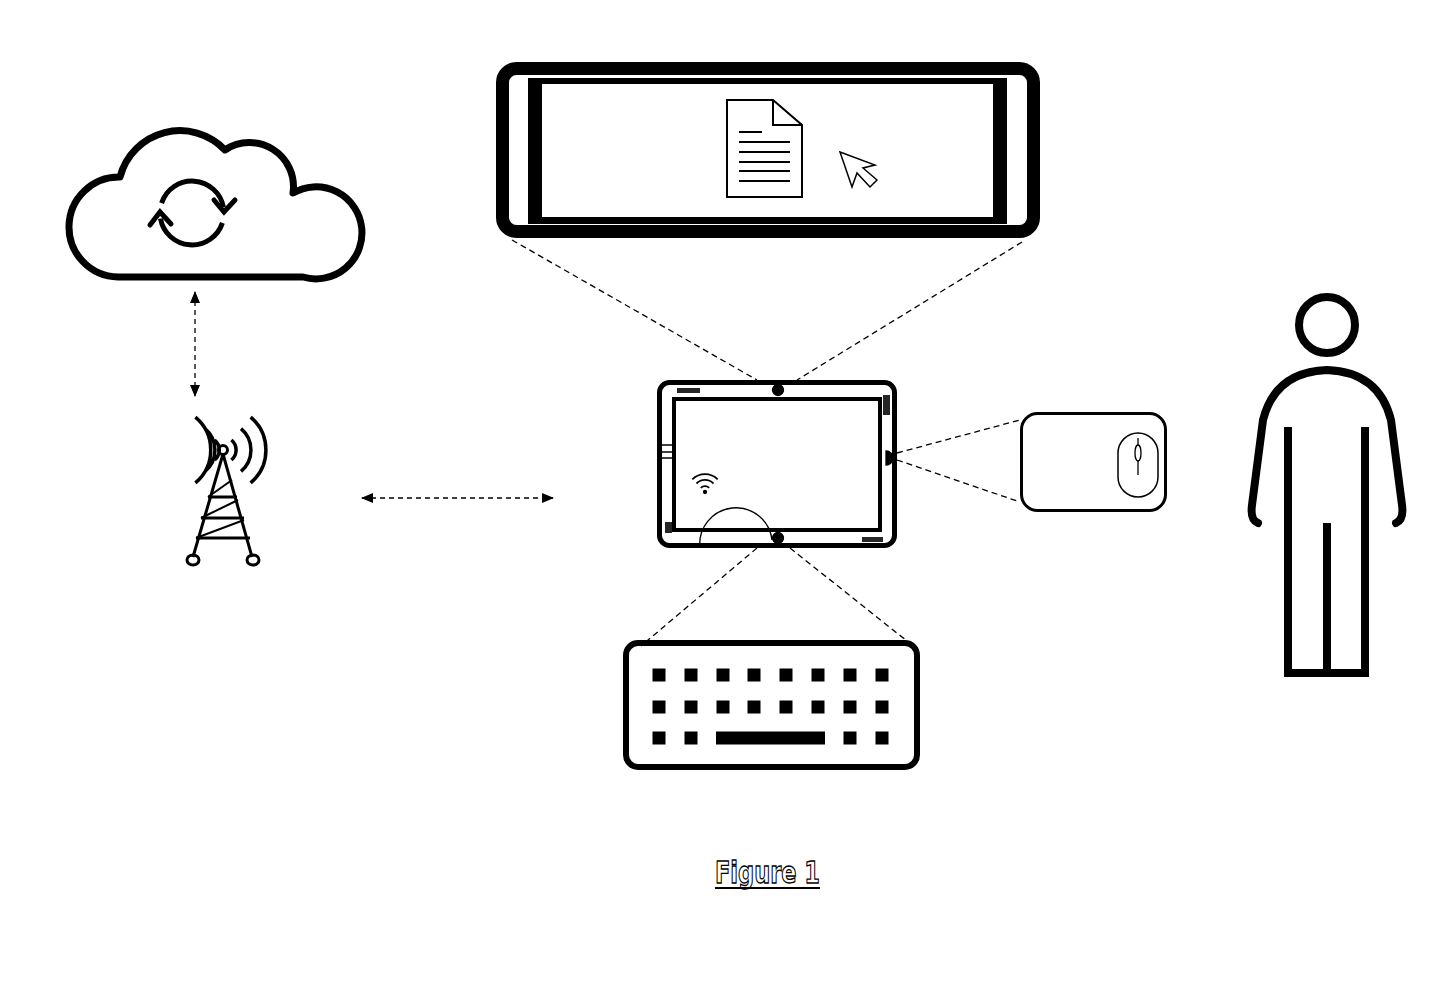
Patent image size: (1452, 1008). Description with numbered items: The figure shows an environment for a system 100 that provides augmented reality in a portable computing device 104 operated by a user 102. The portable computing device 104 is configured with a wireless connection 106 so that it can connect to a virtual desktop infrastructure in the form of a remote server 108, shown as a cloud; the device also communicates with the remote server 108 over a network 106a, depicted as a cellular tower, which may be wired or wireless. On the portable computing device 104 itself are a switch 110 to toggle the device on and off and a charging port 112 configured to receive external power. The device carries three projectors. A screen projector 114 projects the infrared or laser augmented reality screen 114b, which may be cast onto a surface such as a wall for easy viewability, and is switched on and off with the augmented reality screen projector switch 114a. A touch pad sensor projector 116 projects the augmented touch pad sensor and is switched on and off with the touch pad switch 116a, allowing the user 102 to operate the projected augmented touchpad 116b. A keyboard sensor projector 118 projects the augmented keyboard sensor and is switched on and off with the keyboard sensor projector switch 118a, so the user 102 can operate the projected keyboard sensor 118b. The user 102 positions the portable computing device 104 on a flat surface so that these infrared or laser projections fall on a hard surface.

The system 100 is at (320, 83).
The user 102 is at (1362, 320).
The portable computing device 104 is at (808, 410).
The wireless connection 106 is at (693, 480).
The network 106a is at (247, 500).
The remote server 108 is at (160, 120).
The switch 110 is at (665, 527).
The charging port 112 is at (660, 448).
The screen projector 114 is at (779, 379).
The augmented reality screen projector switch 114a is at (677, 392).
The augmented reality screen 114b is at (1007, 168).
The touch pad sensor projector 116 is at (895, 447).
The touch pad switch 116a is at (958, 398).
The augmented touchpad 116b is at (1094, 462).
The keyboard sensor projector 118 is at (700, 548).
The keyboard sensor projector switch 118a is at (978, 541).
The keyboard sensor 118b is at (907, 722).